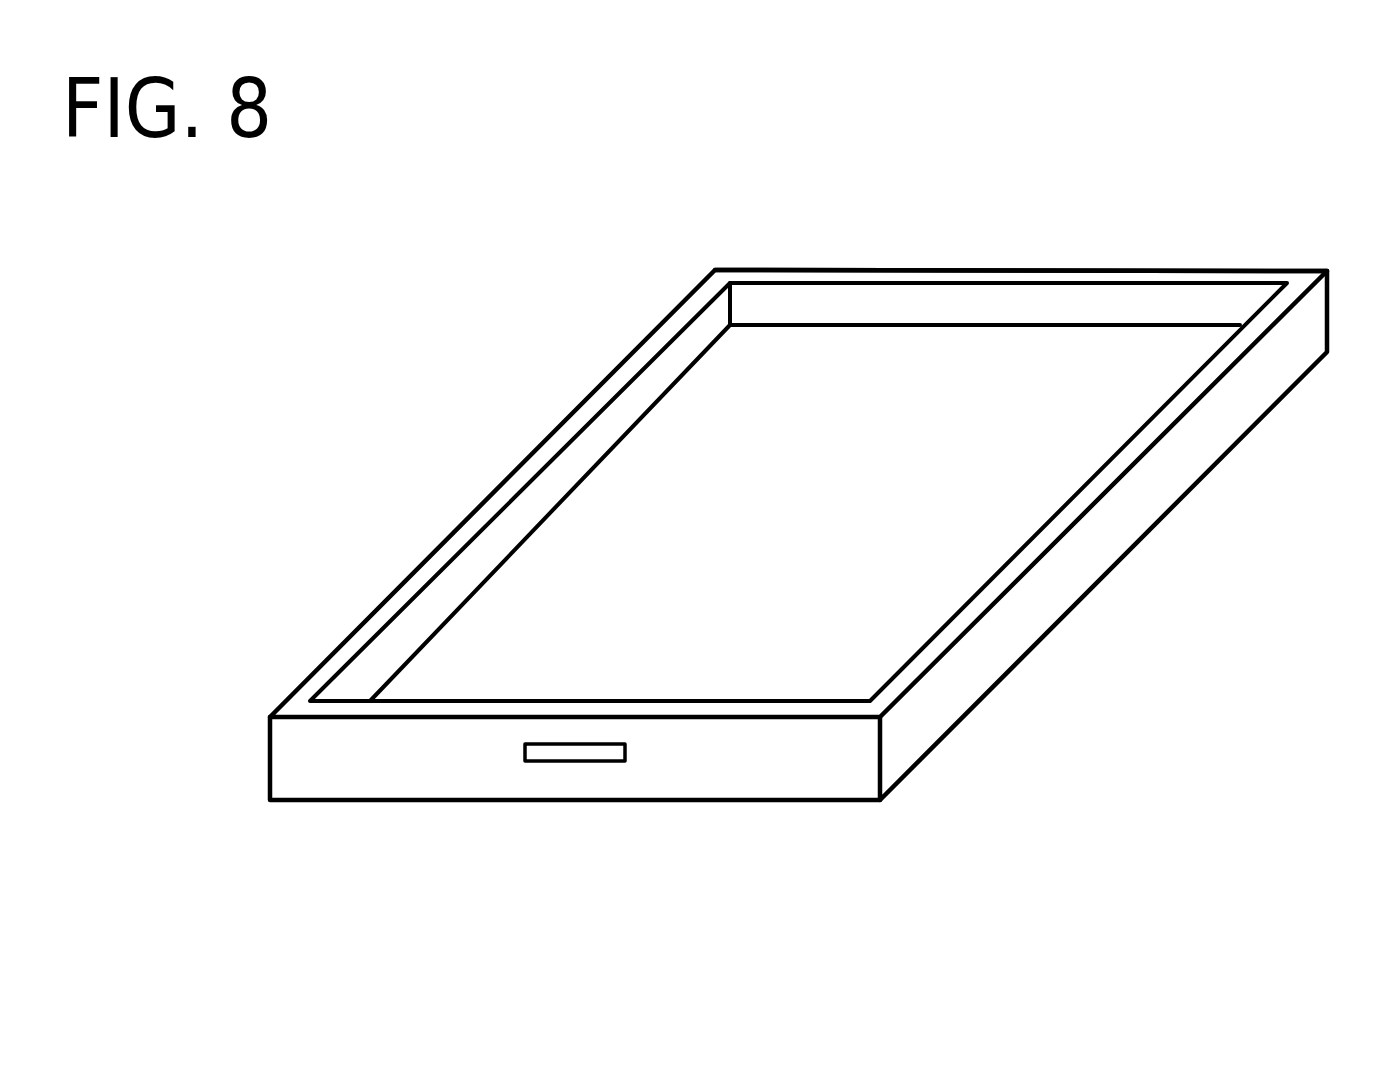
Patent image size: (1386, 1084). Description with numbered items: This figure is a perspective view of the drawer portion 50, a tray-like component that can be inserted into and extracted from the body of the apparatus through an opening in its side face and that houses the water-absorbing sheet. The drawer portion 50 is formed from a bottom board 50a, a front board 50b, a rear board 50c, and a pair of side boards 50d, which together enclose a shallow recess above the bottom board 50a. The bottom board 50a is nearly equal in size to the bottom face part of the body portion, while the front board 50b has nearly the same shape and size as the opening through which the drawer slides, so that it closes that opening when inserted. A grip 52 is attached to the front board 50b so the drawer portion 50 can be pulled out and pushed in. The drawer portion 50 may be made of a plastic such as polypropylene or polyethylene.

The drawer portion 50 is at (1108, 176).
The bottom board 50a is at (702, 493).
The front board 50b is at (772, 773).
The rear board 50c is at (937, 271).
The side boards 50d is at (1107, 533).
The grip 52 is at (568, 752).